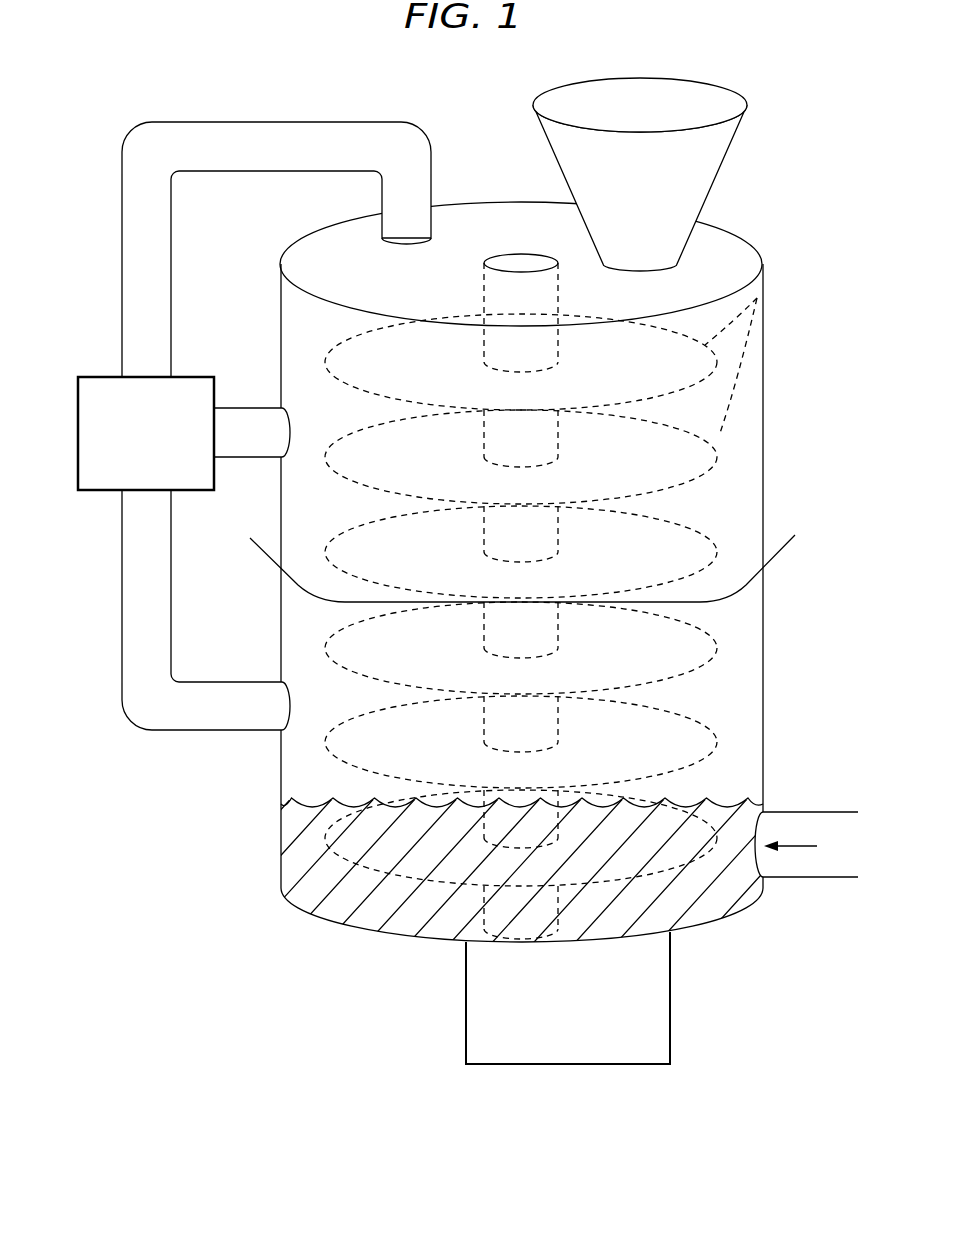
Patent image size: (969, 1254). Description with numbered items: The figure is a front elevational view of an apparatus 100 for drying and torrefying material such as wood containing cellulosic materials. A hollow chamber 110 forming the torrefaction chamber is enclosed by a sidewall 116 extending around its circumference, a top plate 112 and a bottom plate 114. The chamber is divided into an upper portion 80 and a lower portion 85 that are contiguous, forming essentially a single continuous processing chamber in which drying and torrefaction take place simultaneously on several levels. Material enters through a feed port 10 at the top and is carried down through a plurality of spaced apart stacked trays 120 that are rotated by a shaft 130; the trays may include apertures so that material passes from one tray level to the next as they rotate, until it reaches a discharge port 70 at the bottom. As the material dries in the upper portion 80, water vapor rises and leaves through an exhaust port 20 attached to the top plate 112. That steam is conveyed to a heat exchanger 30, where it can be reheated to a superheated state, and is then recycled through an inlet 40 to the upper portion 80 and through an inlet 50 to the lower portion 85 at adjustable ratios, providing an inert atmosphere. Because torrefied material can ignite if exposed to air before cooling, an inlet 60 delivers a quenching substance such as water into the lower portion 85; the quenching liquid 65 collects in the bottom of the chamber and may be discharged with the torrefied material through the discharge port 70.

The feed port 10 is at (695, 97).
The exhaust port 20 is at (376, 122).
The heat exchanger 30 is at (190, 377).
The inlet 40 is at (248, 458).
The inlet 50 is at (203, 730).
The inlet 60 is at (822, 812).
The liquid bath 65 is at (298, 898).
The discharge port 70 is at (627, 1064).
The upper portion 80 is at (766, 484).
The lower portion 85 is at (768, 655).
The apparatus 100 is at (475, 581).
The hollow chamber 110 is at (553, 579).
The top plate 112 is at (740, 262).
The bottom plate 114 is at (747, 923).
The sidewall 116 is at (763, 392).
The trays 120 is at (766, 297).
The shaft 130 is at (557, 345).